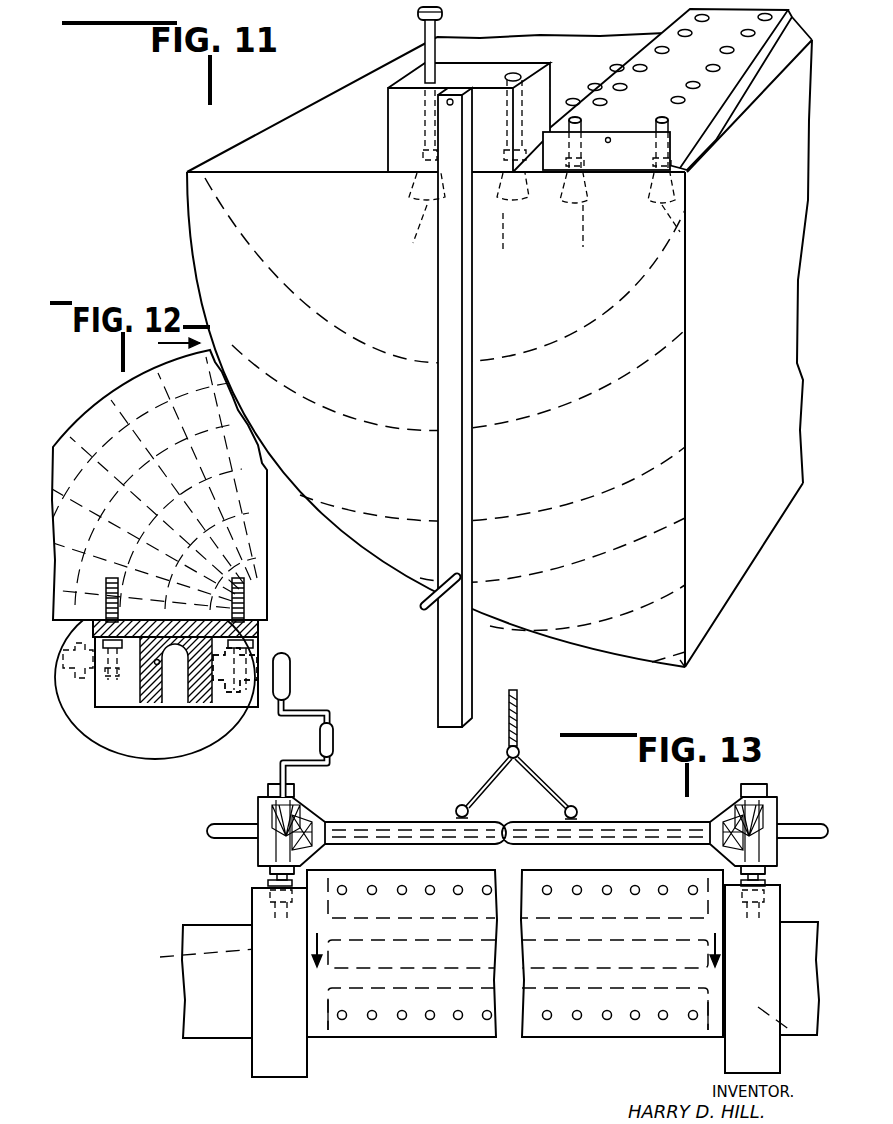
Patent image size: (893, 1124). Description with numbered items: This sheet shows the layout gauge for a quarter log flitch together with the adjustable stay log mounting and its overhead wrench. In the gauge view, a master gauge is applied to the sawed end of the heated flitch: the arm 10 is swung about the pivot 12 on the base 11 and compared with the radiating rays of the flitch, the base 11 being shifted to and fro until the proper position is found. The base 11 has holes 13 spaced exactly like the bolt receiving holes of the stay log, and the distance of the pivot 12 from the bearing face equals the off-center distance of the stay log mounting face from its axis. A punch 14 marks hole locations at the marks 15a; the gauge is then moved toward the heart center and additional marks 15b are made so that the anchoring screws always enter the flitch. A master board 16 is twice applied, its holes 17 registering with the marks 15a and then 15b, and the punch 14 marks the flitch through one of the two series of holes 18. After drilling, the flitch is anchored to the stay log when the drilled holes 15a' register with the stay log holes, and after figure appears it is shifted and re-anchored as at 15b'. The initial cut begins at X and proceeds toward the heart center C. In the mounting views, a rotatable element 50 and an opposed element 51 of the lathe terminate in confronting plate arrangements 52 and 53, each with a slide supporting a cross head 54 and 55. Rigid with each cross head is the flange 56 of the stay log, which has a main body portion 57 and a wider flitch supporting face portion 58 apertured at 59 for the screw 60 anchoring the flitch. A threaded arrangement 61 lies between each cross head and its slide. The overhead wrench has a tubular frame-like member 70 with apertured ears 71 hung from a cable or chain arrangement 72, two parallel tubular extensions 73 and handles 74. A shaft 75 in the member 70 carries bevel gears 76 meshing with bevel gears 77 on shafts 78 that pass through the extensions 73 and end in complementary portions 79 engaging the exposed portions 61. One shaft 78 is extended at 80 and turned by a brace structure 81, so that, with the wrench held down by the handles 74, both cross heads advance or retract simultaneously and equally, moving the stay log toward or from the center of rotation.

In FIG. 11, the arm 10 is at (443, 300).
In FIG. 11, the base 11 is at (395, 162).
In FIG. 11, the pivot 12 is at (447, 103).
In FIG. 11, the holes 13 is at (440, 80).
In FIG. 11, the punch 14 is at (418, 17).
In FIG. 11, the punch marks 15a is at (468, 201).
In FIG. 11, the flitch drilled holes 15a' is at (451, 242).
In FIG. 11, the additional marks 15b is at (656, 169).
In FIG. 11, the re-anchoring position 15b' is at (666, 238).
In FIG. 11, the master board 16 is at (620, 140).
In FIG. 11, the holes 17 is at (668, 126).
In FIG. 11, the series of holes 18 is at (683, 33).
In FIG. 11, the heart center C is at (790, 55).
In FIG. 12, the heart center C is at (265, 617).
In FIG. 11, the initial cut position X is at (692, 674).
In FIG. 13, the rotatable element 50 is at (208, 1032).
In FIG. 13, the opposed element 51 is at (802, 920).
In FIG. 12, the confronting plate arrangement 52 is at (180, 743).
In FIG. 13, the confronting plate arrangement 52 is at (265, 1070).
In FIG. 13, the confronting plate arrangement 53 is at (733, 1050).
In FIG. 13, the cross head 54 is at (198, 958).
In FIG. 13, the cross head 55 is at (790, 1030).
In FIG. 12, the flange 56 is at (110, 688).
In FIG. 13, the flange 56 is at (357, 873).
In FIG. 12, the main body portion 57 is at (155, 700).
In FIG. 13, the main body portion 57 is at (408, 985).
In FIG. 12, the flitch supporting face portion 58 is at (110, 690).
In FIG. 13, the flitch supporting face portion 58 is at (458, 985).
In FIG. 12, the apertures 59 is at (260, 632).
In FIG. 13, the apertures 59 is at (487, 891).
In FIG. 12, the screw 60 is at (103, 640).
In FIG. 12, the threaded arrangement 61 is at (100, 658).
In FIG. 13, the threaded arrangement 61 is at (252, 890).
In FIG. 13, the frame-like member 70 is at (423, 820).
In FIG. 13, the apertured ears 71 is at (458, 806).
In FIG. 13, the cable or chain arrangement 72 is at (517, 770).
In FIG. 13, the tubular extensions 73 is at (268, 787).
In FIG. 13, the handles 74 is at (220, 826).
In FIG. 13, the shaft 75 is at (382, 830).
In FIG. 13, the bevel gears 76 is at (300, 823).
In FIG. 13, the bevel gears 77 is at (290, 816).
In FIG. 13, the shafts 78 is at (280, 828).
In FIG. 13, the complementary portions 79 is at (287, 873).
In FIG. 13, the shaft extension 80 is at (278, 770).
In FIG. 13, the brace structure 81 is at (333, 730).